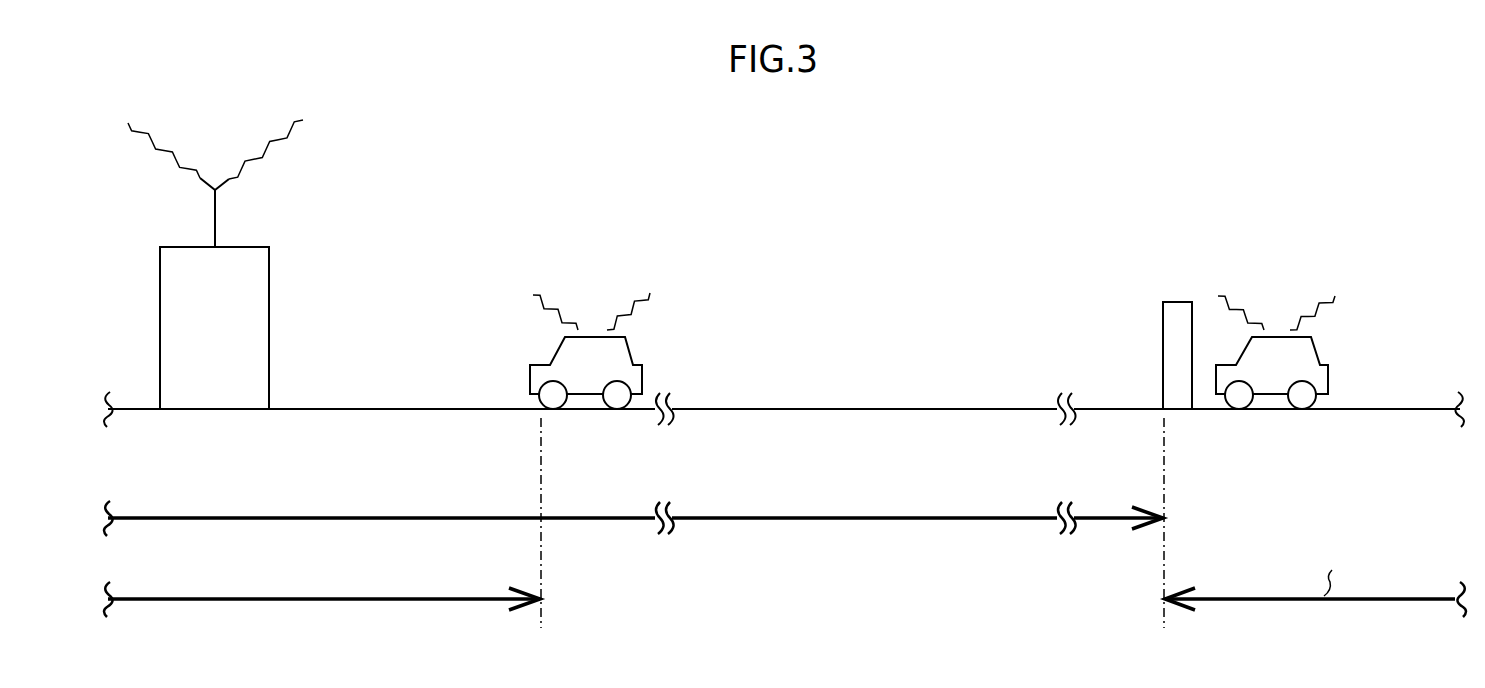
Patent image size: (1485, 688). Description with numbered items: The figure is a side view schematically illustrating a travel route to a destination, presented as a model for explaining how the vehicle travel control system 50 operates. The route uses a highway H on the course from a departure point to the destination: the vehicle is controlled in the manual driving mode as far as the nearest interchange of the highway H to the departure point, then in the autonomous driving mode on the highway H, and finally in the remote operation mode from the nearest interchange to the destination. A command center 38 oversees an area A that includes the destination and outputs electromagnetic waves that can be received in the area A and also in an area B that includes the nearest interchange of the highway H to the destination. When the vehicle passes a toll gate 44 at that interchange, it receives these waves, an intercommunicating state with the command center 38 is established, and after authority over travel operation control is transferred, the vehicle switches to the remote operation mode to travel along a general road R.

The command center 38 is at (269, 264).
The vehicle travel control system 50 is at (285, 254).
The toll gate 44 is at (1175, 301).
The general road R is at (863, 409).
The area A is at (347, 600).
The area B is at (835, 518).
The highway H is at (1406, 408).